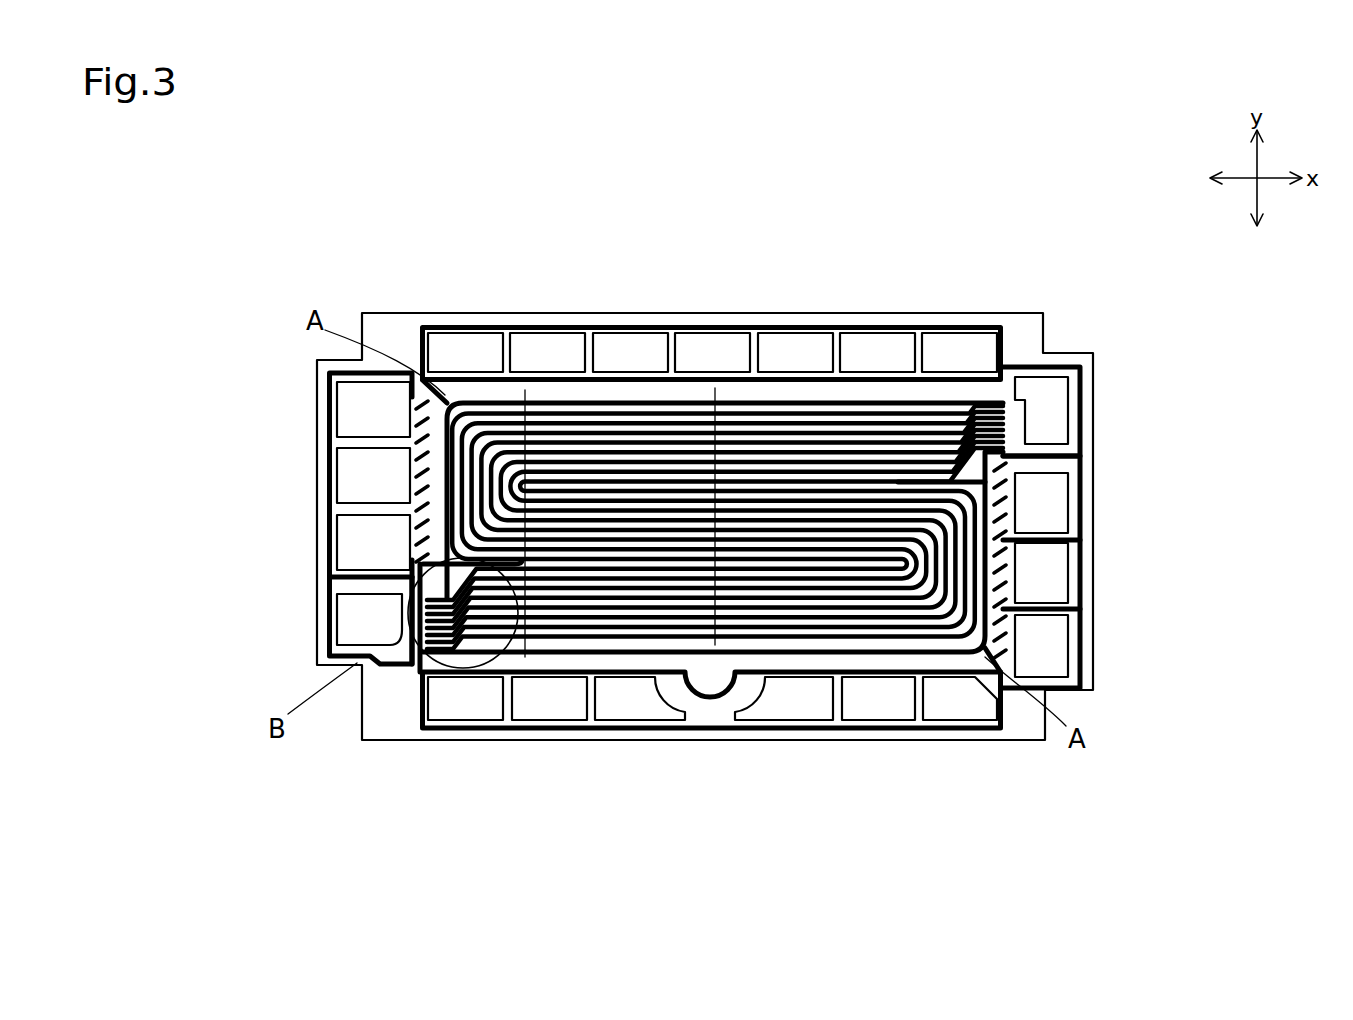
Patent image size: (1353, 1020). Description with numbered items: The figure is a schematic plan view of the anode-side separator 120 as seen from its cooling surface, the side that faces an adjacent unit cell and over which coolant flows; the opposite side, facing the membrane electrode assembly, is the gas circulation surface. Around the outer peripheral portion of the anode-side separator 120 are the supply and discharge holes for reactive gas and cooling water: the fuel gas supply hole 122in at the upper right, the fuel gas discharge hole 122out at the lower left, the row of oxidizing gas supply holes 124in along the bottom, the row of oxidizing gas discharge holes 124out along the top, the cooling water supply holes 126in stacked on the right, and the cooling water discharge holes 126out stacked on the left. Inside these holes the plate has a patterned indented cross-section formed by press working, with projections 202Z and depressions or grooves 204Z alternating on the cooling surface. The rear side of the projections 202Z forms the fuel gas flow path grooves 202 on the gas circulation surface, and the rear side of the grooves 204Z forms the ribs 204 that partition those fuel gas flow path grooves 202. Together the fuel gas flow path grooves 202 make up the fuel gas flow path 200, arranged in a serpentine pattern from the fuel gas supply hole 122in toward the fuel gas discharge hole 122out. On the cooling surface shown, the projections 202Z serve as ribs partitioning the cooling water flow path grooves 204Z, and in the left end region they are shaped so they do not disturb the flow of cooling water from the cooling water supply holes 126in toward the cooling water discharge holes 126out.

The anode-side separator 120 is at (406, 148).
The fuel gas flow path 200 is at (712, 640).
The fuel gas flow path grooves 202 is at (757, 415).
The projections 202Z is at (778, 400).
The ribs 204 is at (750, 421).
The grooves 204Z is at (847, 417).
The oxidizing gas discharge holes 124out is at (950, 352).
The oxidizing gas supply holes 124in is at (985, 722).
The cooling water discharge holes 126out is at (350, 548).
The cooling water supply holes 126in is at (1045, 650).
The fuel gas discharge hole 122out is at (345, 636).
The fuel gas supply hole 122in is at (1050, 413).